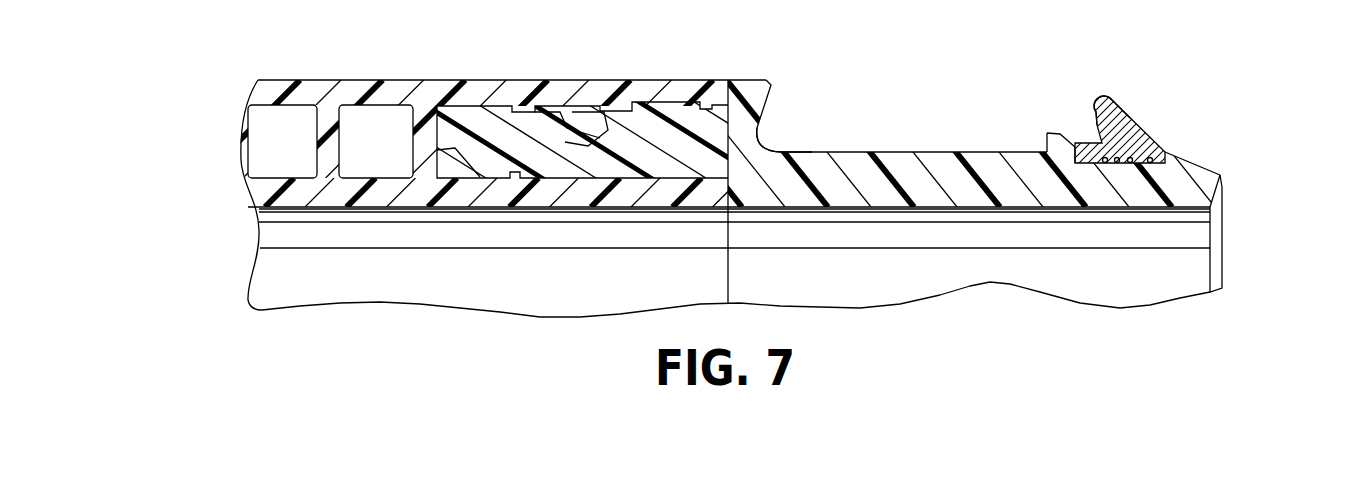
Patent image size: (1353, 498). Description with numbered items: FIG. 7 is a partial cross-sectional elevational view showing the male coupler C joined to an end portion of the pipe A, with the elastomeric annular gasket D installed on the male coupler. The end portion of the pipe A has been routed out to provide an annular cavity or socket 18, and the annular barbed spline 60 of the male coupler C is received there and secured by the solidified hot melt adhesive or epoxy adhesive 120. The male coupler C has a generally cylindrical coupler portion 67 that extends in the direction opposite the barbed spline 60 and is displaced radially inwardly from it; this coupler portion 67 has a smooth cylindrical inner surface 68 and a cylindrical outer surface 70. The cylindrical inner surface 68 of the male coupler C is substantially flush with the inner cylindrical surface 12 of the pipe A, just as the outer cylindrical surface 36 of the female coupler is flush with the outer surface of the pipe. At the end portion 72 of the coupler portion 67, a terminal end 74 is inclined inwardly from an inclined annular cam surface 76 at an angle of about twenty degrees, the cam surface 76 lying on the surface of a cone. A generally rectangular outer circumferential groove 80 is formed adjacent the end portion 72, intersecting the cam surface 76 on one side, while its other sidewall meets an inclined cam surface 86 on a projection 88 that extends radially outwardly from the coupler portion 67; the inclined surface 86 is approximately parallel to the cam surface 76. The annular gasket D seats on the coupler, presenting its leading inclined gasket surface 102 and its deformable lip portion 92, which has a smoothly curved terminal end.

The pipe A is at (303, 72).
The inner cylindrical surface 12 is at (285, 208).
The annular cavity or socket 18 is at (466, 112).
The outer cylindrical surface 36 is at (355, 80).
The annular barbed spline 60 is at (585, 133).
The coupler portion 67 is at (903, 163).
The cylindrical inner surface 68 is at (977, 208).
The cylindrical outer surface 70 is at (810, 152).
The end portion 72 is at (1187, 192).
The terminal end 74 is at (1223, 188).
The inclined annular cam surface 76 is at (1203, 162).
The outer circumferential groove or recess 80 is at (1105, 165).
The inclined cam surface 86 is at (1063, 143).
The projection 88 is at (1047, 143).
The deformable lip portion 92 is at (1098, 103).
The leading inclined gasket surface 102 is at (1130, 147).
The solidified hot melt adhesive or epoxy adhesive 120 is at (542, 130).
The male coupler C is at (818, 206).
The annular gasket D is at (1125, 145).